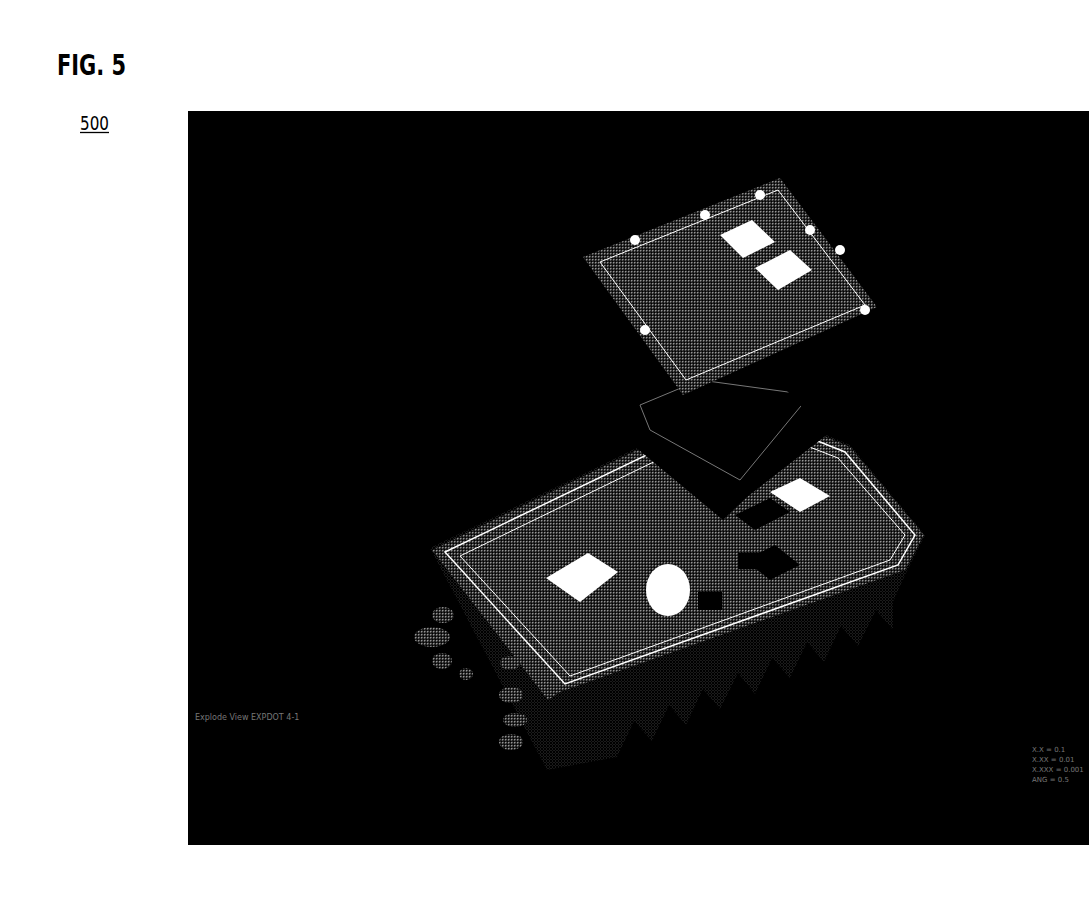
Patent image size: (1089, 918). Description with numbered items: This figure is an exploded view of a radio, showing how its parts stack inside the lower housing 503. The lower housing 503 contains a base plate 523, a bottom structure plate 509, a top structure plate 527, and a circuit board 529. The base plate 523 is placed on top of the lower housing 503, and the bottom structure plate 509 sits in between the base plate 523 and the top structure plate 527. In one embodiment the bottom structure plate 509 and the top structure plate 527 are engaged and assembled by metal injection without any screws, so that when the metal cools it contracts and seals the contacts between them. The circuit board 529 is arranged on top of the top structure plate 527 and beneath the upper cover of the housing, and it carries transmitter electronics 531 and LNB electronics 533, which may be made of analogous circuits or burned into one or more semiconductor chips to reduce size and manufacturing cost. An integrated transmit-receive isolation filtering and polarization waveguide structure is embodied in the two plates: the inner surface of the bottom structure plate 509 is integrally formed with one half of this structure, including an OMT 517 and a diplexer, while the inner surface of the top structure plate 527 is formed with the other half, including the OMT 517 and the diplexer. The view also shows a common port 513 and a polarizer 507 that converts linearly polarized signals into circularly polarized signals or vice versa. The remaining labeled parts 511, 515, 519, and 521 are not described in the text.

The lower housing 503 is at (543, 762).
The polarizer 507 is at (578, 642).
The bottom structure plate 509 is at (752, 518).
The connector 511 is at (818, 495).
The common port 513 is at (478, 685).
The circuit components 515 is at (747, 563).
The OMT 517 is at (668, 592).
The mounting bracket 519 is at (800, 382).
The circuit component 521 is at (757, 555).
The base plate 523 is at (583, 572).
The top structure plate 527 is at (792, 367).
The circuit board 529 is at (623, 246).
The transmitter electronics 531 is at (742, 233).
The LNB electronics 533 is at (774, 263).